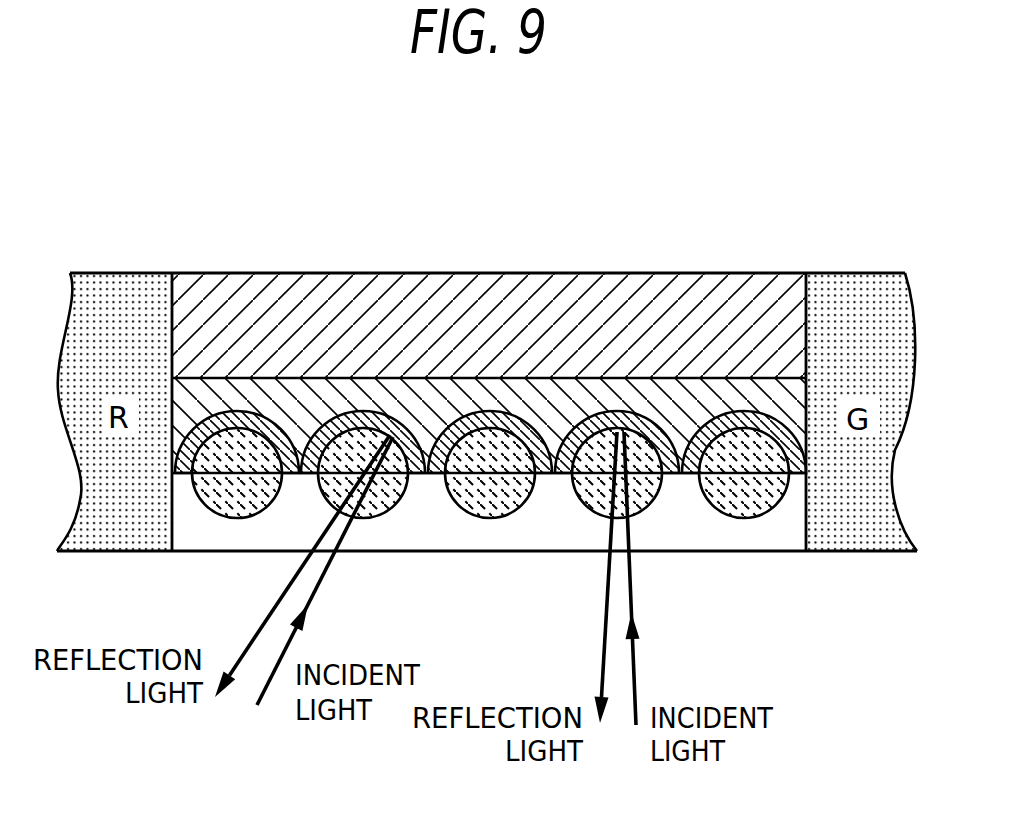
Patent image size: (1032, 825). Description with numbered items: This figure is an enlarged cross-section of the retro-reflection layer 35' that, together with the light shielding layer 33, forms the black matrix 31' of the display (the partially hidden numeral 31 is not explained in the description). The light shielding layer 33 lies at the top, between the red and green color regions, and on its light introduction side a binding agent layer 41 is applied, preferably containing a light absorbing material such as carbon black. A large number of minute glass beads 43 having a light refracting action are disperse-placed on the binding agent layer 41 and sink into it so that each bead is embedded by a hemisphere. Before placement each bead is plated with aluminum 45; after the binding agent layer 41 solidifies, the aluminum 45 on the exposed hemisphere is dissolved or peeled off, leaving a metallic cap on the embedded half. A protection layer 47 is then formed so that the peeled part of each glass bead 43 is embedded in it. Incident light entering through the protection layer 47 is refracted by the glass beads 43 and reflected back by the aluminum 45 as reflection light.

The pixel structure 31 is at (692, 480).
The black matrix 31' is at (493, 317).
The light shielding layer 33 is at (612, 278).
The retro-reflection layer 35' is at (489, 575).
The binding agent layer 41 is at (418, 393).
The glass beads 43 is at (397, 508).
The aluminum 45 is at (234, 433).
The protection layer 47 is at (504, 543).